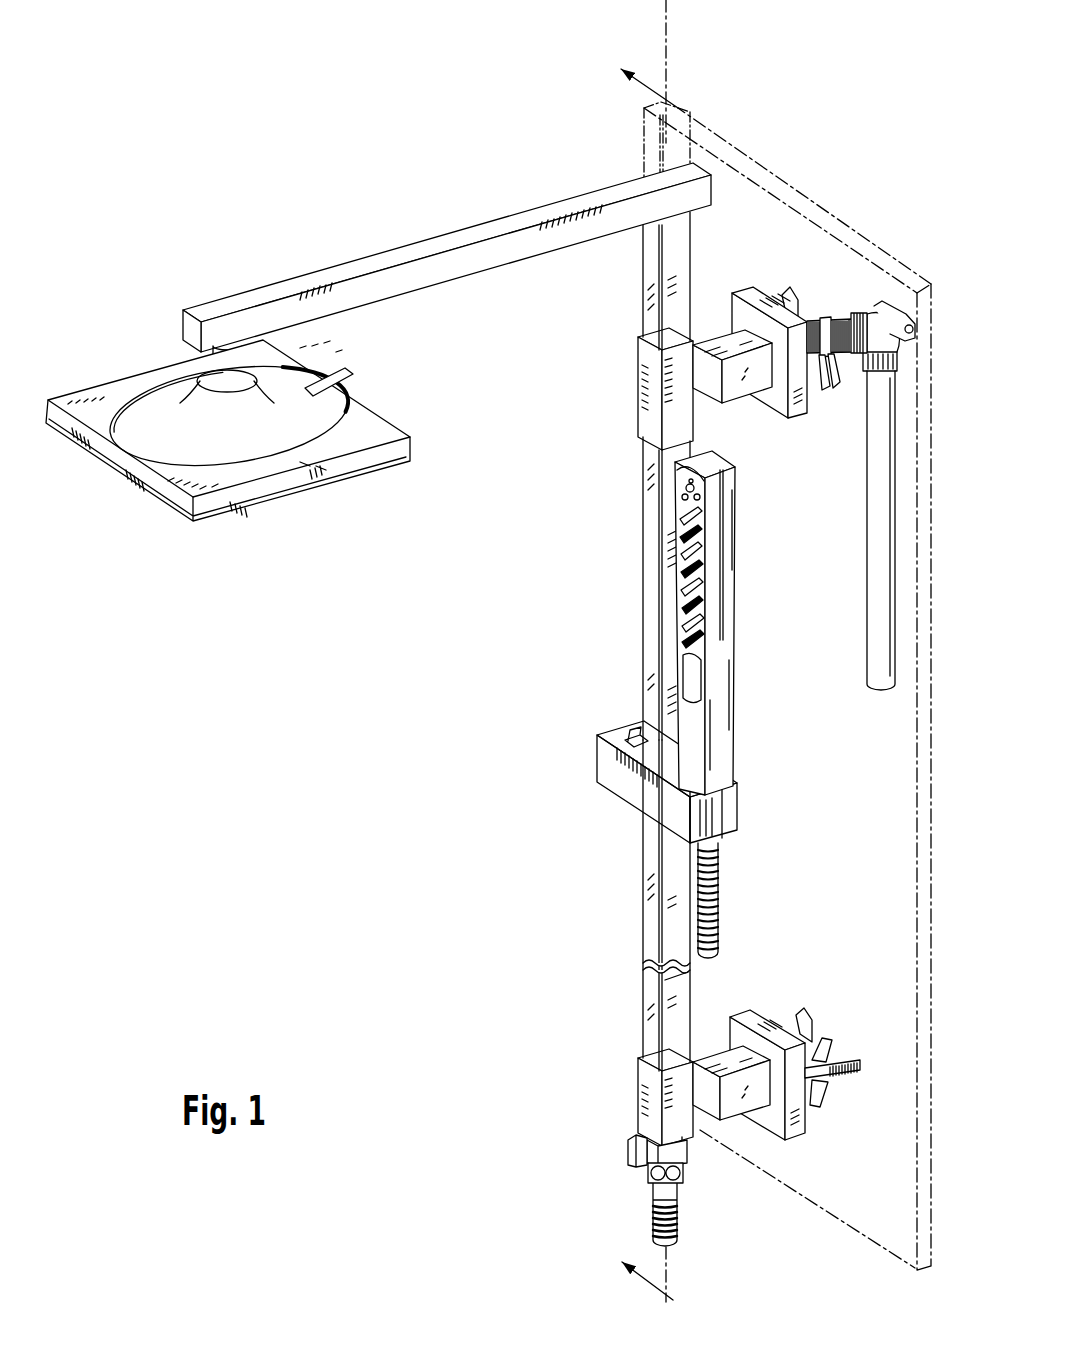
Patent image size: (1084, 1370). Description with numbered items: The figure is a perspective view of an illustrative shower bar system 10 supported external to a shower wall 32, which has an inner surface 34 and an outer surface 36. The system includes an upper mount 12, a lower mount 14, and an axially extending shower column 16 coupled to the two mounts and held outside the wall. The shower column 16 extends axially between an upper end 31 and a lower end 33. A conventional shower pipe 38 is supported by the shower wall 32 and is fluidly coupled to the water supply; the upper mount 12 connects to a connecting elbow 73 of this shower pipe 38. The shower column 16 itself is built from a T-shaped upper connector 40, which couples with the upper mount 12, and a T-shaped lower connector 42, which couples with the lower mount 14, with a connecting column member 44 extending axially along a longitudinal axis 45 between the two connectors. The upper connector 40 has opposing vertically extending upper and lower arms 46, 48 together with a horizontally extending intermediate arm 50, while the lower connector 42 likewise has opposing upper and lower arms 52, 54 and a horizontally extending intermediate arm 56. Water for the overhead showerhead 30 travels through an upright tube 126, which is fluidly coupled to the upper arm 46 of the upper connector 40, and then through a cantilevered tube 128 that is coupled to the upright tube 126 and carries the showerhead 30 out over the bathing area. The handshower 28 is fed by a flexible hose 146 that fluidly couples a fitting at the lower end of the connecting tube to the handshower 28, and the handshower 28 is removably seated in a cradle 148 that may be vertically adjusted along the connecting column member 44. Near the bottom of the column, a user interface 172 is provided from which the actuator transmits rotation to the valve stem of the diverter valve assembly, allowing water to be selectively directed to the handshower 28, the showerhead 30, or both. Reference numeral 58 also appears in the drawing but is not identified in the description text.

The shower bar system 10 is at (217, 112).
The upper support or mount 12 is at (808, 290).
The lower support or mount 14 is at (815, 1010).
The shower column or bar 16 is at (638, 873).
The handshower 28 is at (747, 598).
The showerhead 30 is at (165, 525).
The upper end 31 is at (618, 278).
The shower wall 32 is at (787, 180).
The lower end 33 is at (565, 1140).
The inner surface 34 is at (862, 262).
The outer surface 36 is at (795, 259).
The shower pipe 38 is at (873, 366).
The upper connector 40 is at (645, 358).
The lower connector 42 is at (637, 1112).
The connecting column member 44 is at (645, 935).
The longitudinal axis 45 is at (668, 30).
The upper receiver or arm 46 is at (688, 350).
The lower receiver or arm 48 is at (660, 445).
The intermediate receiver or arm 50 is at (703, 385).
The upper receiver or arm 52 is at (648, 1068).
The lower receiver or arm 54 is at (690, 1135).
The intermediate receiver or arm 56 is at (712, 1112).
The slide bar section above lower collar 58 is at (678, 990).
The connecting elbow 73 is at (857, 330).
The upright tube 126 is at (648, 322).
The cantilevered arm or tube 128 is at (388, 258).
The flexible hose 146 is at (718, 872).
The cradle 148 is at (600, 760).
The user interface 172 is at (612, 1183).